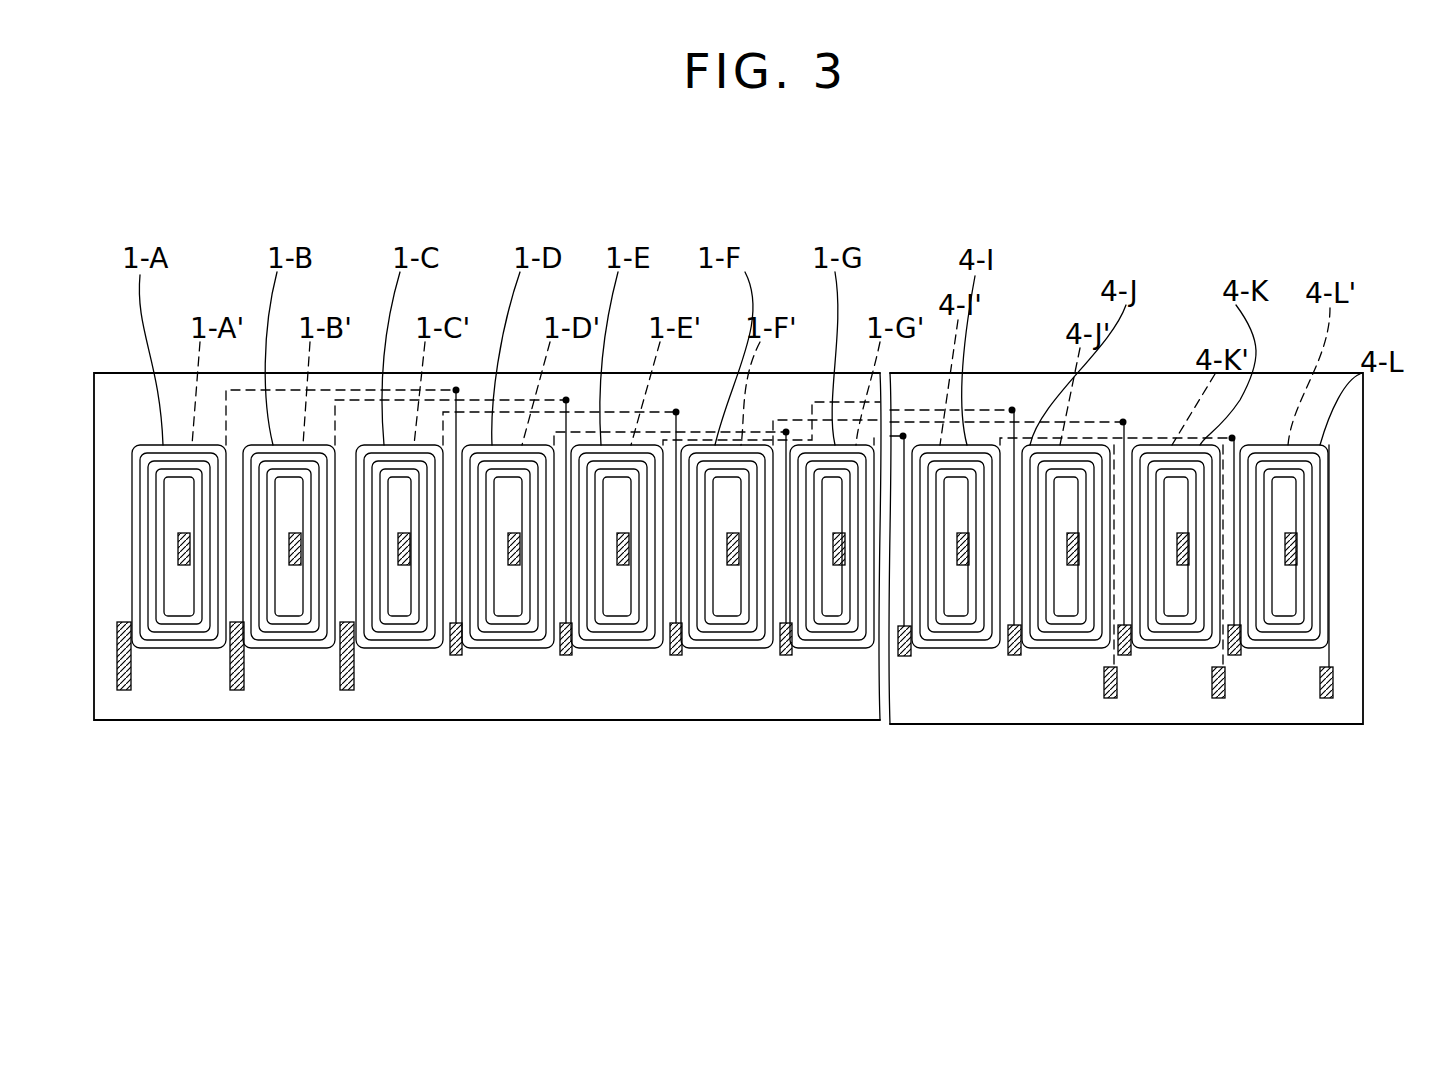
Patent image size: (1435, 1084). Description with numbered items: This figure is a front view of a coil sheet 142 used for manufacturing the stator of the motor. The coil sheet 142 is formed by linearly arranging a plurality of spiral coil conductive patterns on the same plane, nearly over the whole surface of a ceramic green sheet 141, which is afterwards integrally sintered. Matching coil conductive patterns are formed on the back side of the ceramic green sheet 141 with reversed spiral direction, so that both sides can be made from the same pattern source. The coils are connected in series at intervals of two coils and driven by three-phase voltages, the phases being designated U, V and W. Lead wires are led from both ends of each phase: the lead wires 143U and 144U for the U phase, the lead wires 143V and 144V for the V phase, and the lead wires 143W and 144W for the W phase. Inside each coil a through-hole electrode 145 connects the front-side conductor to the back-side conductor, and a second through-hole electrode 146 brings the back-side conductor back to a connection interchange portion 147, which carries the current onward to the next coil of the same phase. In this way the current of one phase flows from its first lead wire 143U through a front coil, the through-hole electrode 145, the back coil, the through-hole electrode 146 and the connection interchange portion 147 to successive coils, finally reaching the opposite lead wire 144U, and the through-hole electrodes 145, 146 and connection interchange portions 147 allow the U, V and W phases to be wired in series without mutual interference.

The ceramic green sheet 141 is at (1039, 404).
The coil sheet 142 is at (1166, 398).
The U-phase lead wire 143U is at (124, 690).
The V-phase lead wire 143V is at (237, 690).
The W-phase lead wire 143W is at (347, 690).
The U-phase lead wire 144U is at (1108, 698).
The V-phase lead wire 144V is at (1218, 698).
The W-phase lead wire 144W is at (1326, 698).
The through-hole electrode 145 is at (186, 565).
The through-hole electrode 146 is at (459, 388).
The connection interchange portion 147 is at (456, 657).